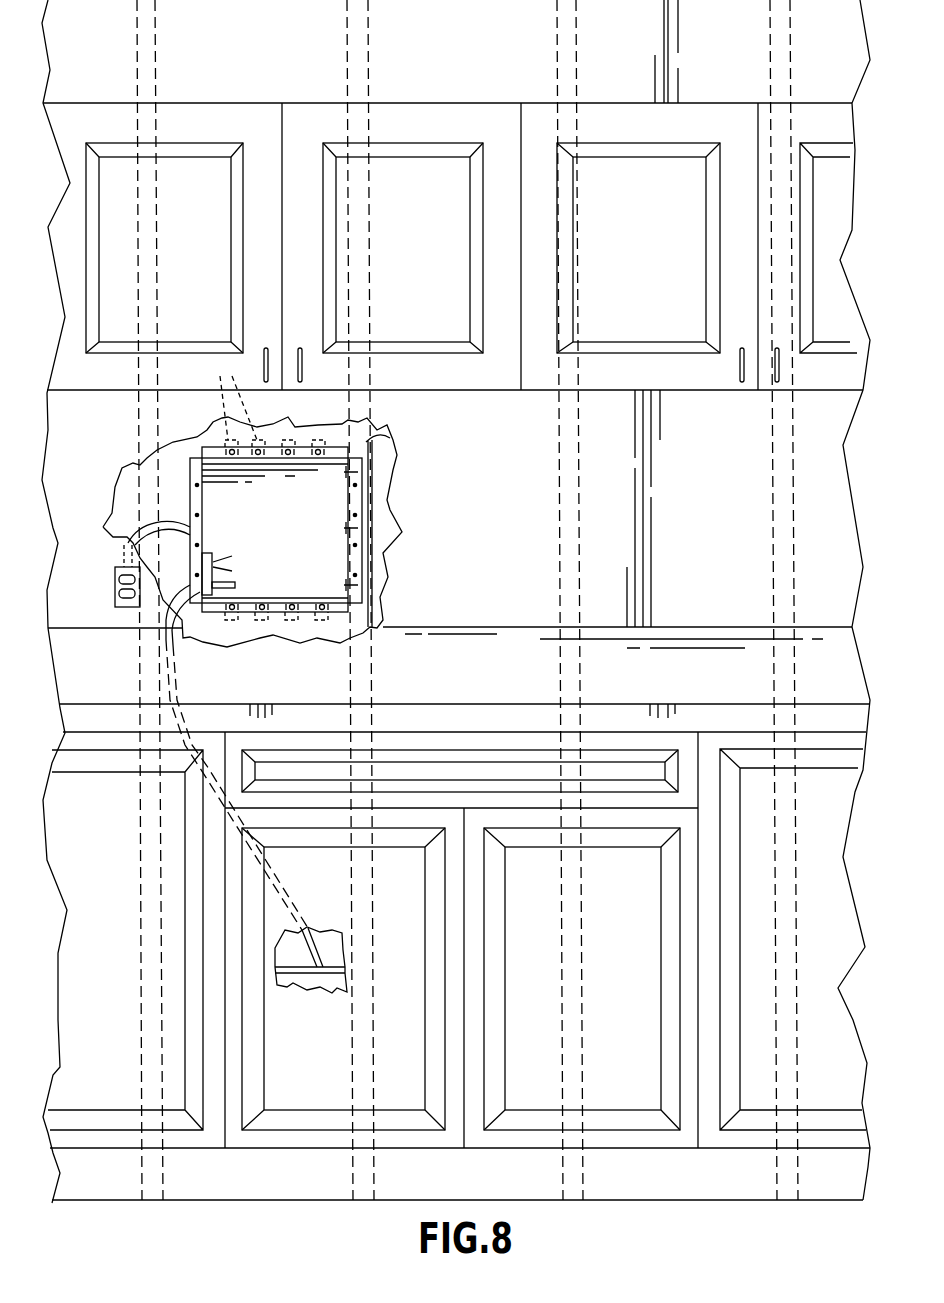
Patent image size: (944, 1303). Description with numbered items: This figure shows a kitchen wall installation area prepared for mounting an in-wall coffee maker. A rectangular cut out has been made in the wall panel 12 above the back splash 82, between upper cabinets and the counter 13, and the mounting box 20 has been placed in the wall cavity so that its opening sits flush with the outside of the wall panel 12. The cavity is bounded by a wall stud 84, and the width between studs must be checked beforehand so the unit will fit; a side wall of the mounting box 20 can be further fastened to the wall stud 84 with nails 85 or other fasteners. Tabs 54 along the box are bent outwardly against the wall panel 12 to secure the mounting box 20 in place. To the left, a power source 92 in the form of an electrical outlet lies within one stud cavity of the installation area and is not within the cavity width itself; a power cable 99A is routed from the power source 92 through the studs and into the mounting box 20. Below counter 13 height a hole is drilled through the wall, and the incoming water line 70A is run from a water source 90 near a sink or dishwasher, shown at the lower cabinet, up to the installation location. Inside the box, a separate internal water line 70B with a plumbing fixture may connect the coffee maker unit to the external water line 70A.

The wall panel 12 is at (497, 552).
The counter 13 is at (503, 703).
The mounting box 20 is at (372, 493).
The tabs 54 is at (235, 397).
The incoming water line 70A is at (195, 648).
The internal water line 70B is at (240, 583).
The back splash 82 is at (112, 680).
The wall stud 84 is at (381, 440).
The nails 85 is at (345, 586).
The water source 90 is at (338, 992).
The power source 92 is at (115, 584).
The power cable 99A is at (193, 532).